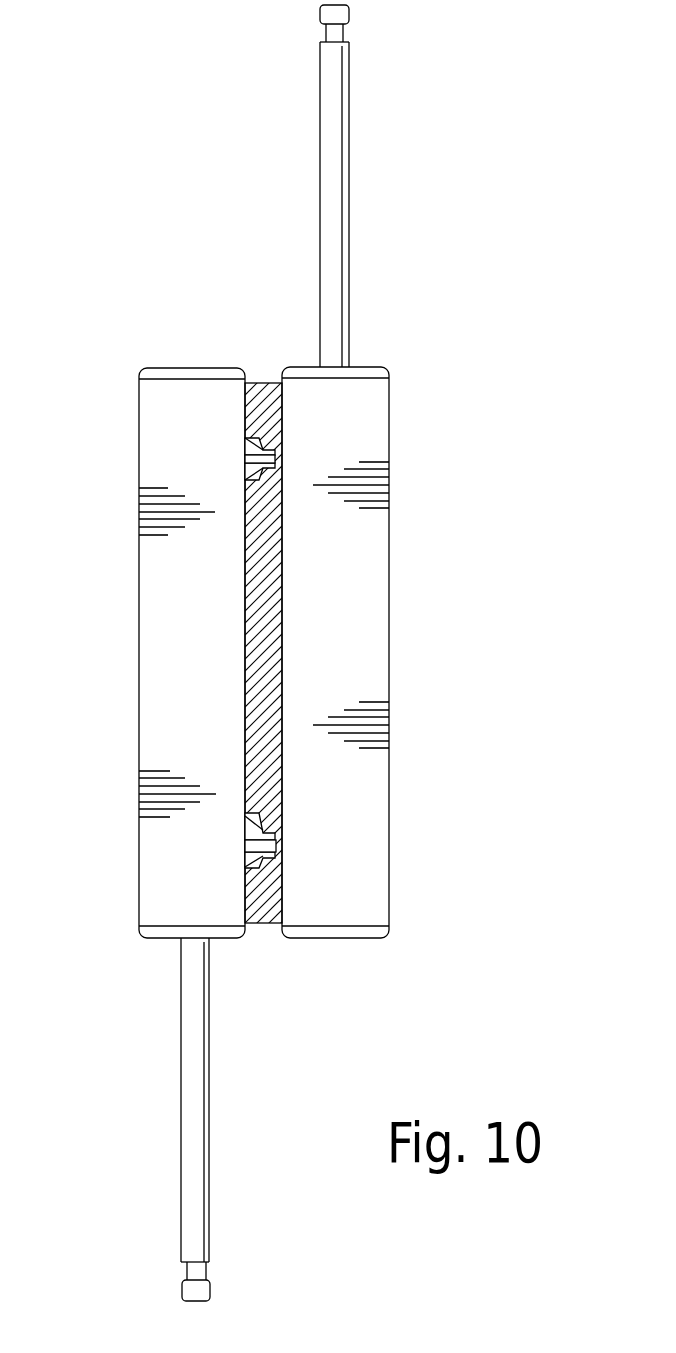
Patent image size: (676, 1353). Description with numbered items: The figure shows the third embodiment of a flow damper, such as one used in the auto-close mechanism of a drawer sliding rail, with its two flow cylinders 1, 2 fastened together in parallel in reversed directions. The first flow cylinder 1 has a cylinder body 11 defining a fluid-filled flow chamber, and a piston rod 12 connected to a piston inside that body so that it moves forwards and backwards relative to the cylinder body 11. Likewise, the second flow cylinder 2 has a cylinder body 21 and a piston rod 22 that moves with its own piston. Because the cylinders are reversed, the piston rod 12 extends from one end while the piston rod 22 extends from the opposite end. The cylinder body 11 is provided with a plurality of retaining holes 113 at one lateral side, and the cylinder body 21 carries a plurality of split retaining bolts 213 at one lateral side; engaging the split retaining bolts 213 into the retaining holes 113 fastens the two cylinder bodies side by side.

The flow cylinder 1 is at (182, 829).
The cylinder body 11 is at (139, 672).
The piston rod 12 is at (181, 1103).
The retaining holes 113 is at (263, 437).
The flow cylinder 2 is at (368, 471).
The cylinder body 21 is at (389, 609).
The piston rod 22 is at (349, 153).
The split retaining bolts 213 is at (279, 460).